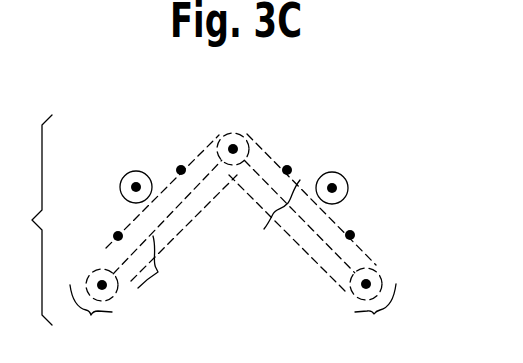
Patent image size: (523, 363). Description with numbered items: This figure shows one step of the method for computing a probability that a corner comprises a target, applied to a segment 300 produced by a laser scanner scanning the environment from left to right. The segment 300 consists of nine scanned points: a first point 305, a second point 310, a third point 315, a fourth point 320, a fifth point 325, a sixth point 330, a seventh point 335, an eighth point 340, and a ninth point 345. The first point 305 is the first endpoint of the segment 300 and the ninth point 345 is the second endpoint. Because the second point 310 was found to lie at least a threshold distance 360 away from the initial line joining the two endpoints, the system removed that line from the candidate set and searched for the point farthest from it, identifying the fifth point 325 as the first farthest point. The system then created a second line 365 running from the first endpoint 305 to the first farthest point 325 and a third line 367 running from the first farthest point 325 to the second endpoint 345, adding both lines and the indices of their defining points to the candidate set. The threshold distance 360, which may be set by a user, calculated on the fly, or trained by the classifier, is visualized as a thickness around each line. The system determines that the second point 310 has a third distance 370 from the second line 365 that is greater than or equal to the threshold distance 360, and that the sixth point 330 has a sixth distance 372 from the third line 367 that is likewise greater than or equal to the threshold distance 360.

The segment 300 is at (368, 96).
The first point 305 is at (98, 270).
The second point 310 is at (116, 231).
The third point 315 is at (137, 186).
The fourth point 320 is at (183, 167).
The fifth point 325 is at (236, 148).
The sixth point 330 is at (289, 168).
The seventh point 335 is at (335, 188).
The eighth point 340 is at (352, 234).
The ninth point 345 is at (369, 283).
The threshold distance 360 is at (91, 315).
The second line 365 is at (190, 220).
The third line 367 is at (313, 258).
The third distance 370 is at (158, 272).
The sixth distance 372 is at (264, 229).